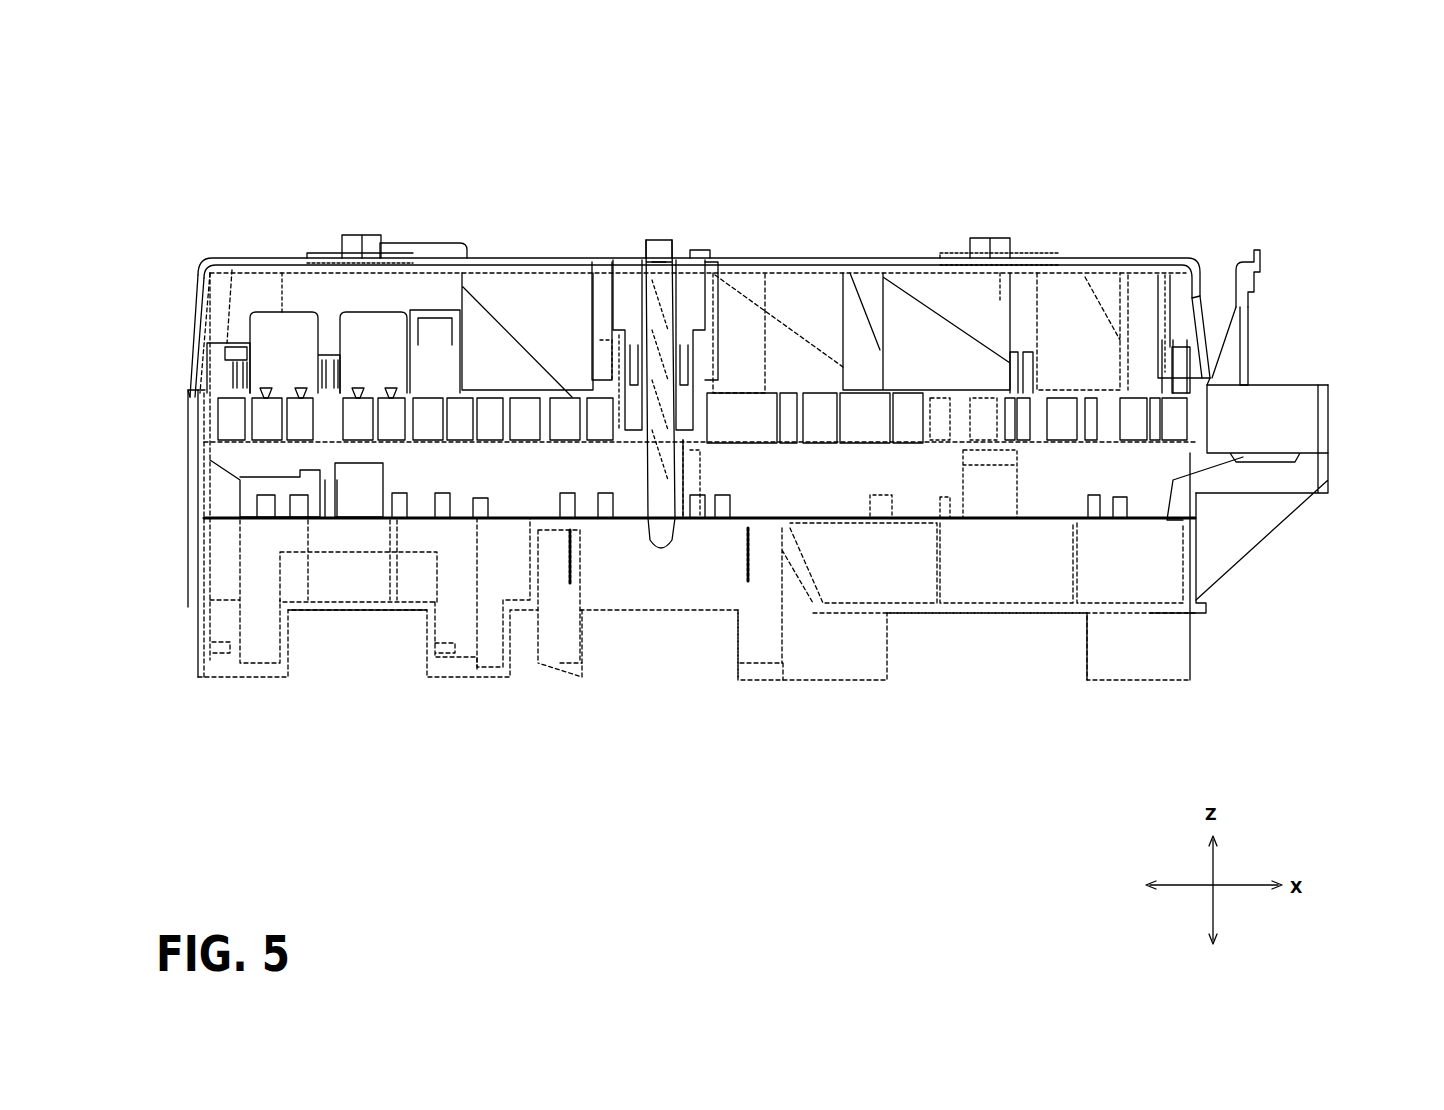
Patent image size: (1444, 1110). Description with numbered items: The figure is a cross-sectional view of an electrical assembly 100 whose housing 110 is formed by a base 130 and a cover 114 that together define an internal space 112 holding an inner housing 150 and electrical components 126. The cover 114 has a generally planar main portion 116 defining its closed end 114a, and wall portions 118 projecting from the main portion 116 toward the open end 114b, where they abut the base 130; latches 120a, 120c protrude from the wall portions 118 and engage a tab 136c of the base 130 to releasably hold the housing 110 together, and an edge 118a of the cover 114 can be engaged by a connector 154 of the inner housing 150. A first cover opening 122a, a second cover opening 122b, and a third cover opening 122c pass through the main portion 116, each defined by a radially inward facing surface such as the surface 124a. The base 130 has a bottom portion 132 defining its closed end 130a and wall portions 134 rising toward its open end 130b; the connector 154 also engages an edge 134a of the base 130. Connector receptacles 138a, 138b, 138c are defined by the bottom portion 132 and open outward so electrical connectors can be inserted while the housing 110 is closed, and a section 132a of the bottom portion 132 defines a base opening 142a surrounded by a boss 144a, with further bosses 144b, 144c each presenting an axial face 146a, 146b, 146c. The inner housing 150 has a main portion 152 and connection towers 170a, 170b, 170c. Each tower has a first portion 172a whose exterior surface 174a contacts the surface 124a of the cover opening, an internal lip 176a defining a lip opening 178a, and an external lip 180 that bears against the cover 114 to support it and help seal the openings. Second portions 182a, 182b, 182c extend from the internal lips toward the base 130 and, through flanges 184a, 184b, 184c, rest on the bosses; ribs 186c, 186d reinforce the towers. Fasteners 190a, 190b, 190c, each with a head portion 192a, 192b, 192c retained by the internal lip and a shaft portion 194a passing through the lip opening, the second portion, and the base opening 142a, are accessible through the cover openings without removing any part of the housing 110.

The electrical assembly 100 is at (1214, 246).
The housing 110 is at (200, 251).
The internal space 112 is at (1181, 291).
The cover 114 is at (193, 297).
The closed end 114a is at (186, 268).
The open end 114b is at (186, 385).
The main portion 116 is at (242, 263).
The wall portion 118 is at (199, 328).
The edge 118a is at (1203, 380).
The latch 120a is at (420, 270).
The latch 120c is at (1261, 256).
The first cover opening 122a is at (688, 250).
The second cover opening 122b is at (384, 246).
The third cover opening 122c is at (1031, 247).
The first radially inward facing surface 124a is at (621, 250).
The electrical component 126 is at (272, 268).
The base 130 is at (197, 562).
The closed end 130a is at (200, 670).
The open end 130b is at (186, 414).
The bottom portion 132 is at (267, 678).
The section of bottom portion 132a is at (603, 530).
The wall portion 134 is at (201, 510).
The edge 134a is at (1192, 455).
The tab 136c is at (1250, 330).
The connector receptacle 138a is at (713, 642).
The connector receptacle 138b is at (389, 642).
The connector receptacle 138c is at (1051, 645).
The base opening 142a is at (643, 542).
The boss 144a is at (690, 490).
The boss 144b is at (385, 485).
The boss 144c is at (1004, 505).
The axial face 146a is at (638, 463).
The axial face 146b is at (382, 462).
The axial face 146c is at (1016, 462).
The inner housing 150 is at (871, 395).
The main portion 152 is at (1083, 282).
The connector 154 is at (1222, 397).
The connection tower 170a is at (718, 277).
The connection tower 170b is at (333, 440).
The connection tower 170c is at (1011, 443).
The first portion 172a is at (623, 375).
The exterior surface 174a is at (611, 297).
The internal lip 176a is at (616, 348).
The lip opening 178a is at (682, 302).
The external lip 180 is at (721, 290).
The second portion 182a is at (678, 433).
The second portion 182b is at (373, 462).
The second portion 182c is at (975, 465).
The flange 184a is at (683, 473).
The flange 184b is at (345, 472).
The flange 184c is at (978, 472).
The third rib 186c is at (633, 387).
The fourth rib 186d is at (690, 372).
The fastener 190a is at (657, 232).
The fastener 190b is at (356, 232).
The fastener 190c is at (985, 232).
The head portion 192a is at (666, 244).
The head portion 192b is at (282, 312).
The head portion 192c is at (998, 267).
The shaft portion 194a is at (686, 530).